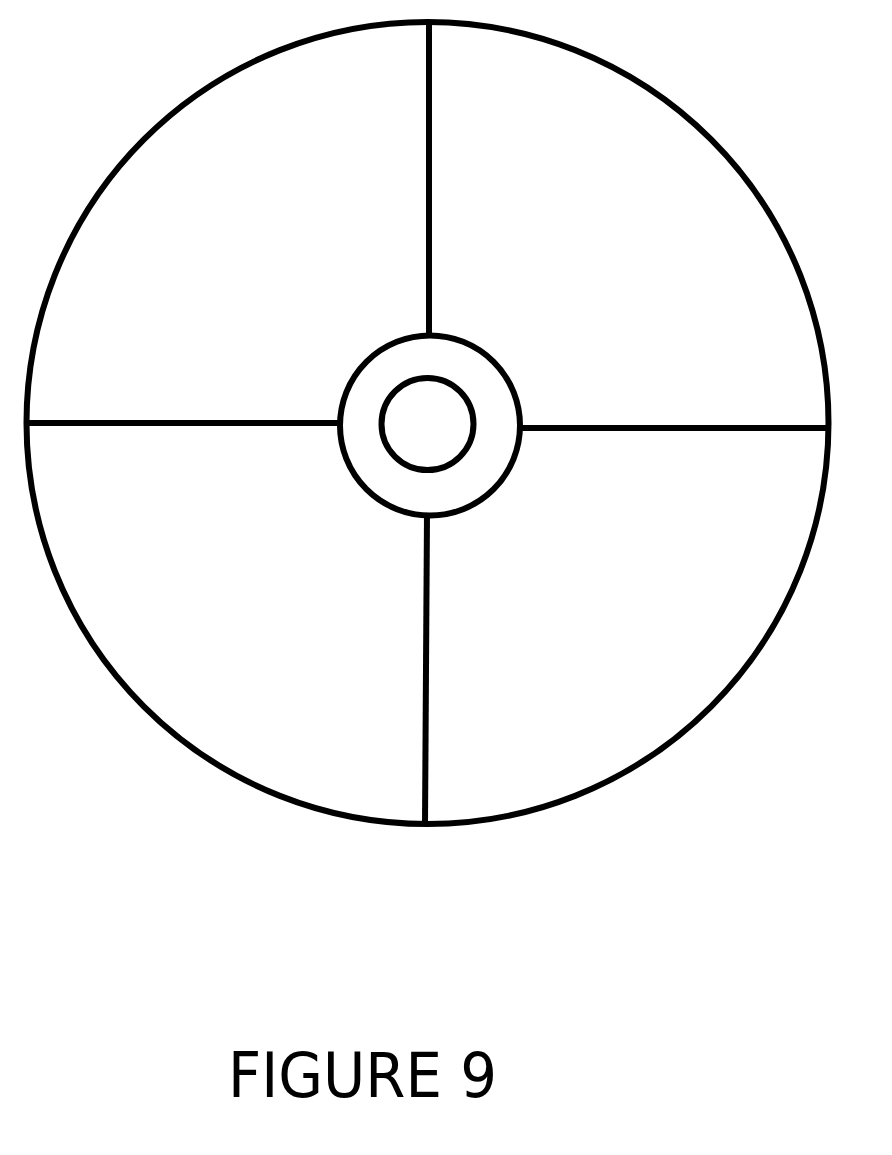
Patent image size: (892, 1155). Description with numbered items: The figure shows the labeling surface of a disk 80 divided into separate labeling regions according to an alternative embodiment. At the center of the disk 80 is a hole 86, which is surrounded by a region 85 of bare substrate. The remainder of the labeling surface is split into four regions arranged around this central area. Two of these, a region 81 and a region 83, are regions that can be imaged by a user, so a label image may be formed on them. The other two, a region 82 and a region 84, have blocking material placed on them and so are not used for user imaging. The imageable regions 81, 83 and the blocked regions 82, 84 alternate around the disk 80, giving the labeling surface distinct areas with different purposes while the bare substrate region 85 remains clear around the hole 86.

The disk 80 is at (602, 792).
The region 81 is at (537, 676).
The region 82 is at (228, 628).
The region 83 is at (294, 273).
The region 84 is at (582, 205).
The region of bare substrate 85 is at (449, 505).
The hole 86 is at (449, 438).